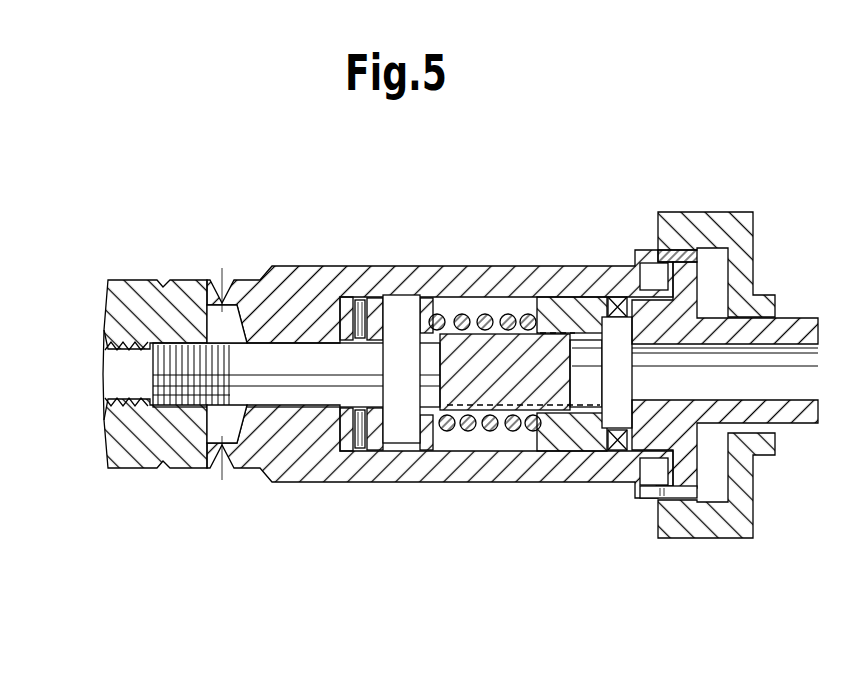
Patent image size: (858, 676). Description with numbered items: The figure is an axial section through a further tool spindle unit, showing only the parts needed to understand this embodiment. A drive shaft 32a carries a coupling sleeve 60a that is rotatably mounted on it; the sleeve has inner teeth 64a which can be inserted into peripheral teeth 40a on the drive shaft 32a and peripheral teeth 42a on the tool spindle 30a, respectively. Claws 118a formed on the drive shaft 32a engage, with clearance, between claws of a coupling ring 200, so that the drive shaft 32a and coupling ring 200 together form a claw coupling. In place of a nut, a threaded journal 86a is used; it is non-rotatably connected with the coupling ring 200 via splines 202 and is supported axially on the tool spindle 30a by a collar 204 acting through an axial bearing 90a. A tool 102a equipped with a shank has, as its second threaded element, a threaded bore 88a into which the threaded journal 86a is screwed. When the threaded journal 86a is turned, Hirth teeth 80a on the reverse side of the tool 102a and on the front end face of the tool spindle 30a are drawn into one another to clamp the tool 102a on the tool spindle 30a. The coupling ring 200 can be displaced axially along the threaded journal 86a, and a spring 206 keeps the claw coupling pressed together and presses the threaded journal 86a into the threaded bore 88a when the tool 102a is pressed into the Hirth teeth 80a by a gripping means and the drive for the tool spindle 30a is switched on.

The tool spindle 30a is at (530, 276).
The tool 102a is at (133, 280).
The threaded bore 88a is at (128, 350).
The threaded journal 86a is at (180, 343).
The Hirth teeth 80a is at (226, 298).
The axial bearing 90a is at (361, 298).
The collar 204 is at (407, 305).
The coupling ring 200 is at (553, 440).
The splines 202 is at (489, 313).
The spring 206 is at (466, 432).
The claws 118a is at (617, 442).
The drive shaft 32a is at (795, 332).
The coupling sleeve 60a is at (745, 232).
The inner teeth 64a is at (656, 255).
The peripheral teeth 40a is at (710, 505).
The peripheral teeth 42a is at (642, 493).